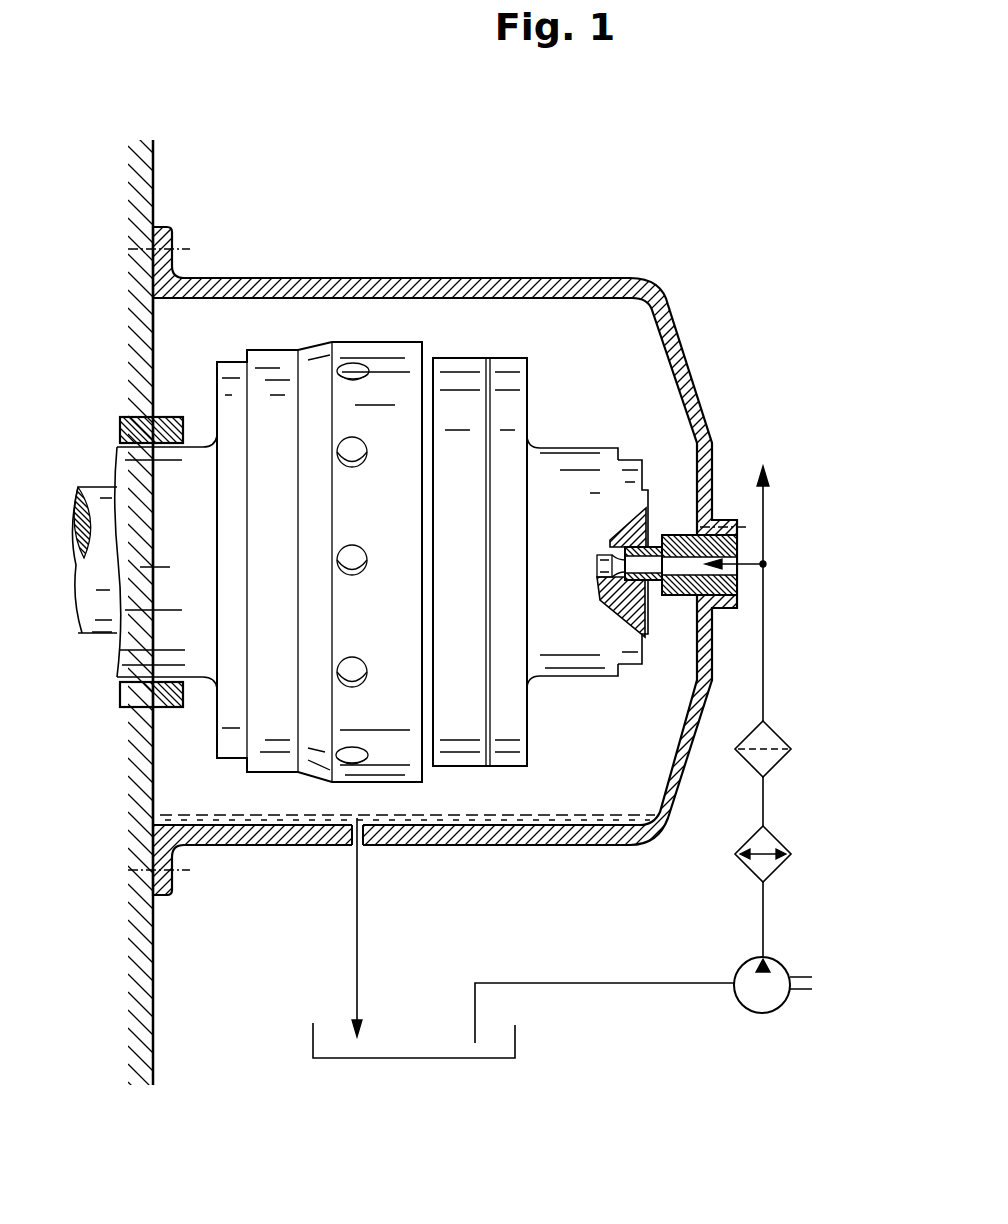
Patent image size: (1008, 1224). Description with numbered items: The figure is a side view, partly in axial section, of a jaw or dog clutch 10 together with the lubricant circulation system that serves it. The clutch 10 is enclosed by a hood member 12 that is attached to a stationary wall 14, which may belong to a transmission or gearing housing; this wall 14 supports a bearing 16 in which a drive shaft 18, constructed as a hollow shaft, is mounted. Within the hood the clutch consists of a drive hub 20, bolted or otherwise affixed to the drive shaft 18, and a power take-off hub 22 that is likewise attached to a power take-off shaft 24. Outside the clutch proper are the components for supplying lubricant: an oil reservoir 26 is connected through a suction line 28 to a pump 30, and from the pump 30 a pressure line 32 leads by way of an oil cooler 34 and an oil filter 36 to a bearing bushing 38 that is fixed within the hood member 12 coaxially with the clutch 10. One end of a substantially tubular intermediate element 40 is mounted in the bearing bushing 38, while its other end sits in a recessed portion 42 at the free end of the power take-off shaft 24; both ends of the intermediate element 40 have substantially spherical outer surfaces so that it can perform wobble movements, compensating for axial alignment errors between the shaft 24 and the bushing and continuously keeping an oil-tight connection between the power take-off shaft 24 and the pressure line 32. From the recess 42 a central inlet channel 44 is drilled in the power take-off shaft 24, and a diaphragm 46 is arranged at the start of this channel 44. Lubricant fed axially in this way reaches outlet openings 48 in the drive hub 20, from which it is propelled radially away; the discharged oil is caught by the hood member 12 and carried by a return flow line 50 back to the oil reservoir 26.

The jaw or dog clutch 10 is at (504, 543).
The hood member 12 is at (334, 288).
The stationary wall 14 is at (155, 176).
The bearing 16 is at (162, 418).
The drive shaft 18 is at (212, 682).
The drive hub 20 is at (319, 543).
The power take-off hub 22 is at (501, 348).
The power take-off shaft 24 is at (650, 518).
The oil reservoir 26 is at (516, 1048).
The suction line 28 is at (585, 985).
The pump 30 is at (752, 1003).
The pressure line 32 is at (761, 928).
The oil cooler 34 is at (748, 866).
The oil filter 36 is at (756, 761).
The bearing bushing 38 is at (690, 564).
The intermediate element 40 is at (652, 582).
The recessed portion 42 is at (611, 589).
The central inlet channel 44 is at (596, 564).
The diaphragm 46 is at (607, 554).
The outlet openings 48 is at (362, 563).
The return flow line 50 is at (358, 946).